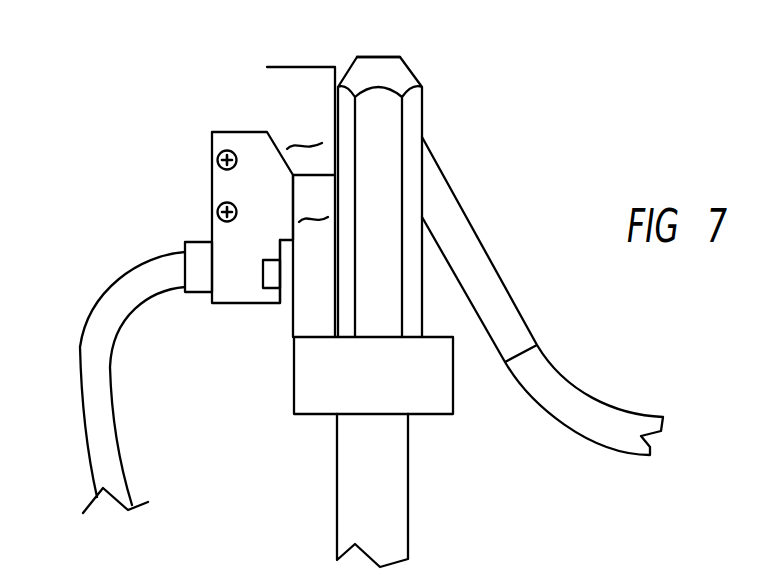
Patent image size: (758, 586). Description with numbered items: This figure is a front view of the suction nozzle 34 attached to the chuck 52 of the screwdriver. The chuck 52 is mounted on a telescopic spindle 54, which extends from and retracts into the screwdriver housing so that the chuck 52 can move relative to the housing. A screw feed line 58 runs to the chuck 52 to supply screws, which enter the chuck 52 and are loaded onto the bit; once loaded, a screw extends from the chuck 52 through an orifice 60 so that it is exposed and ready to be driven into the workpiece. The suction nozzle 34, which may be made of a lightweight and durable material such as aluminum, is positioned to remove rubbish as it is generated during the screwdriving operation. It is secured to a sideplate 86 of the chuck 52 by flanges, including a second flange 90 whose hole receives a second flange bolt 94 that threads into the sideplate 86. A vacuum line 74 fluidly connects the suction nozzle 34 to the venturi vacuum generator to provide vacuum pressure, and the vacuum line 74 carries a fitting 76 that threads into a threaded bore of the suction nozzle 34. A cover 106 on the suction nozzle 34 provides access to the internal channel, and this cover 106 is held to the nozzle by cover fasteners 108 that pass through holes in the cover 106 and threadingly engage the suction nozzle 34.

The suction nozzle 34 is at (267, 92).
The chuck 52 is at (422, 102).
The telescopic spindle 54 is at (385, 478).
The screw feed line 58 is at (497, 268).
The orifice 60 is at (397, 53).
The vacuum line 74 is at (78, 347).
The fitting 76 is at (197, 242).
The sideplate 86 is at (310, 256).
The second flange 90 is at (288, 295).
The second flange bolt 94 is at (268, 290).
The cover 106 is at (304, 132).
The cover fasteners 108 is at (217, 208).